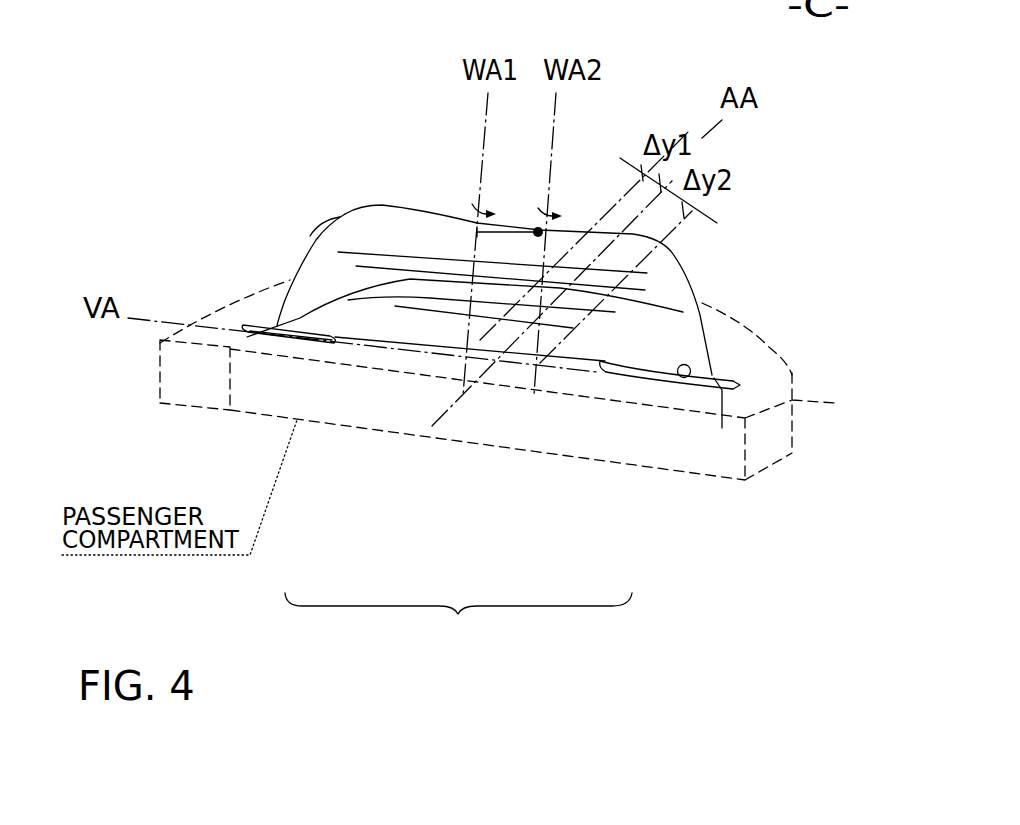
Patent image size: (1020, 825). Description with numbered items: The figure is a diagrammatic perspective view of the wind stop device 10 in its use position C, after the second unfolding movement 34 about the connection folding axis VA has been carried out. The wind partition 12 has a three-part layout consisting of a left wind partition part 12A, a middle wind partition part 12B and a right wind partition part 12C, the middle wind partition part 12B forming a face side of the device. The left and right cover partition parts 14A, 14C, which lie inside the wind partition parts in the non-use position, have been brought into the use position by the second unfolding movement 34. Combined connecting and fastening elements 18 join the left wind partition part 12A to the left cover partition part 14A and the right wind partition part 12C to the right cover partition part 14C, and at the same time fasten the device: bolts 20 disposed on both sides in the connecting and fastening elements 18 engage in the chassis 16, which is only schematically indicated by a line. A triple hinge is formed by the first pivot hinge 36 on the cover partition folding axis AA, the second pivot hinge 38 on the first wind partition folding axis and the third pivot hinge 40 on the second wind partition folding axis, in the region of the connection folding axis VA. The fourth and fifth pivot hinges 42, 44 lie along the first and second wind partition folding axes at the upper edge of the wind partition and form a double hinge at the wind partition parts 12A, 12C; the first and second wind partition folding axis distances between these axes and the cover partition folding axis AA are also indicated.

The wind stop device 10 is at (204, 270).
The wind partition 12 is at (458, 625).
The left wind partition part 12A is at (385, 321).
The middle wind partition part 12B is at (487, 310).
The right wind partition part 12C is at (633, 347).
The left cover partition part 14A is at (413, 282).
The right cover partition part 14C is at (685, 330).
The chassis 16 is at (220, 358).
The connecting and fastening element 18 is at (206, 346).
The bolt 20 is at (684, 377).
The second unfolding movement 34 is at (270, 318).
The first pivot hinge 36 is at (505, 370).
The second pivot hinge 38 is at (455, 368).
The third pivot hinge 40 is at (543, 381).
The fourth pivot hinge 42 is at (465, 192).
The fifth pivot hinge 44 is at (531, 196).